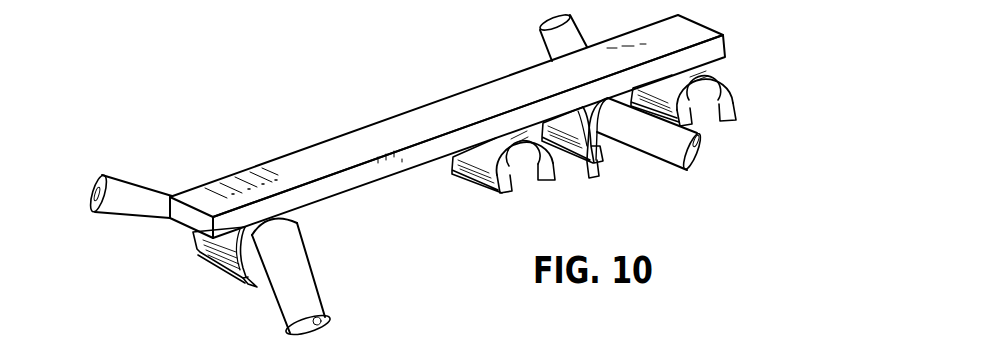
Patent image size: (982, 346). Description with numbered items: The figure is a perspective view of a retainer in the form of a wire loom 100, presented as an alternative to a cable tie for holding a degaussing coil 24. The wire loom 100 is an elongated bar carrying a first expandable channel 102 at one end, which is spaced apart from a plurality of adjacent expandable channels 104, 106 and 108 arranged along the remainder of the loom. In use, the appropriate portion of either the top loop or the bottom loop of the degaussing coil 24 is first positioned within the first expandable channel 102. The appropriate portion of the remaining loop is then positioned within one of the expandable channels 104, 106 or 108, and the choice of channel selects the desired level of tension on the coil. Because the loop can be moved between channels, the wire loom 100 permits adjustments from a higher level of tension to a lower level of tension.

The degaussing coil 24 is at (135, 175).
The wire loom 100 is at (345, 187).
The first expandable channel 102 is at (197, 260).
The expandable channel 104 is at (498, 193).
The expandable channel 106 is at (588, 160).
The expandable channel 108 is at (725, 80).